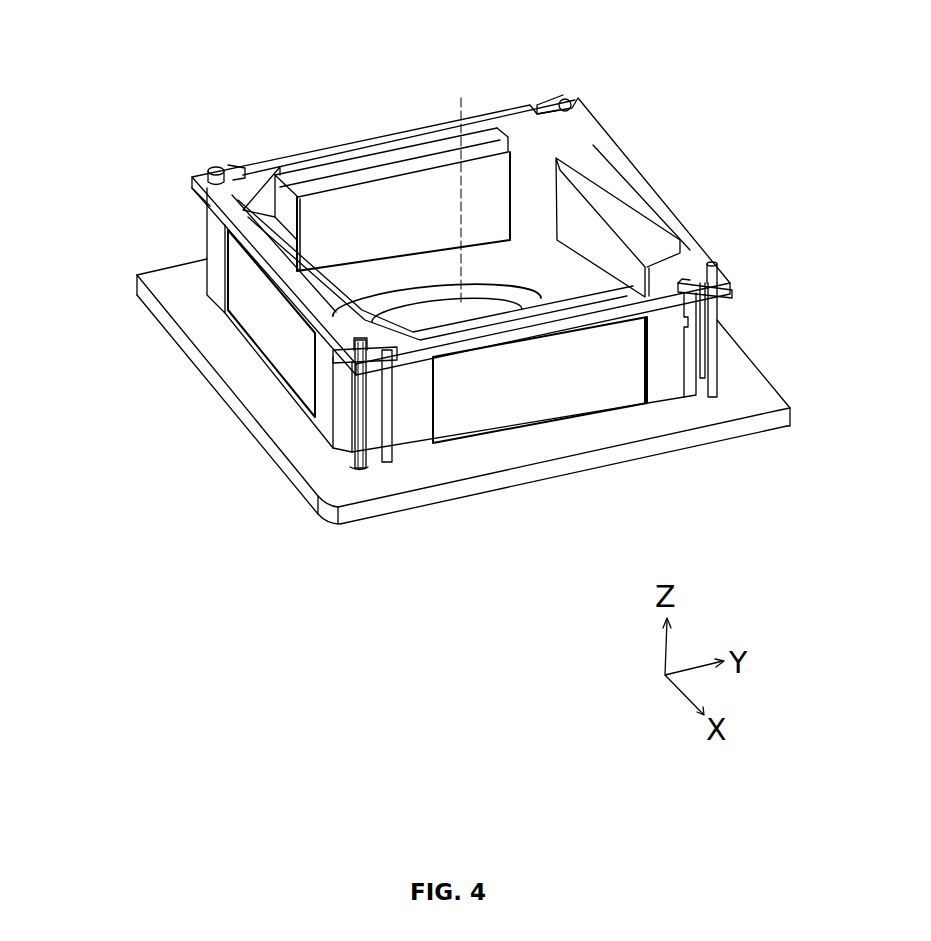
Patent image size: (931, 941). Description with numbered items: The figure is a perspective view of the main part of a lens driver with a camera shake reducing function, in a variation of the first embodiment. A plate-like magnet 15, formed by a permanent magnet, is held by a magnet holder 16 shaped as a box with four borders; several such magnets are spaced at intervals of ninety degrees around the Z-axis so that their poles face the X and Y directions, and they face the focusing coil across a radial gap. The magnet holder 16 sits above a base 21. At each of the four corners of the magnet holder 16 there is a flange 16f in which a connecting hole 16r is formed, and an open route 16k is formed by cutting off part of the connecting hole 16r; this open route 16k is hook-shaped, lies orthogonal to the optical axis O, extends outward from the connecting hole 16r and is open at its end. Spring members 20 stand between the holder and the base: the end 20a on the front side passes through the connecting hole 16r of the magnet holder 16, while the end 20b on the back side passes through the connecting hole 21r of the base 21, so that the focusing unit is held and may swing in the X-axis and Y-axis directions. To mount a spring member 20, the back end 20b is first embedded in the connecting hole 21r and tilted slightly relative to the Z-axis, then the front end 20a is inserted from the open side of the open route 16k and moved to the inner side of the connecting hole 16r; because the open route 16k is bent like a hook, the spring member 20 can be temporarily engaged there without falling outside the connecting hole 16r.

The magnet 15 is at (400, 160).
The magnet holder 16 is at (598, 130).
The flange 16f is at (210, 187).
The open route 16k is at (535, 101).
The connecting hole 16r is at (708, 278).
The spring member 20 is at (372, 423).
The front end of spring member 20a is at (700, 252).
The back end of spring member 20b is at (713, 384).
The base 21 is at (237, 387).
The connecting hole of base 21r is at (354, 468).
The optical axis O is at (459, 160).